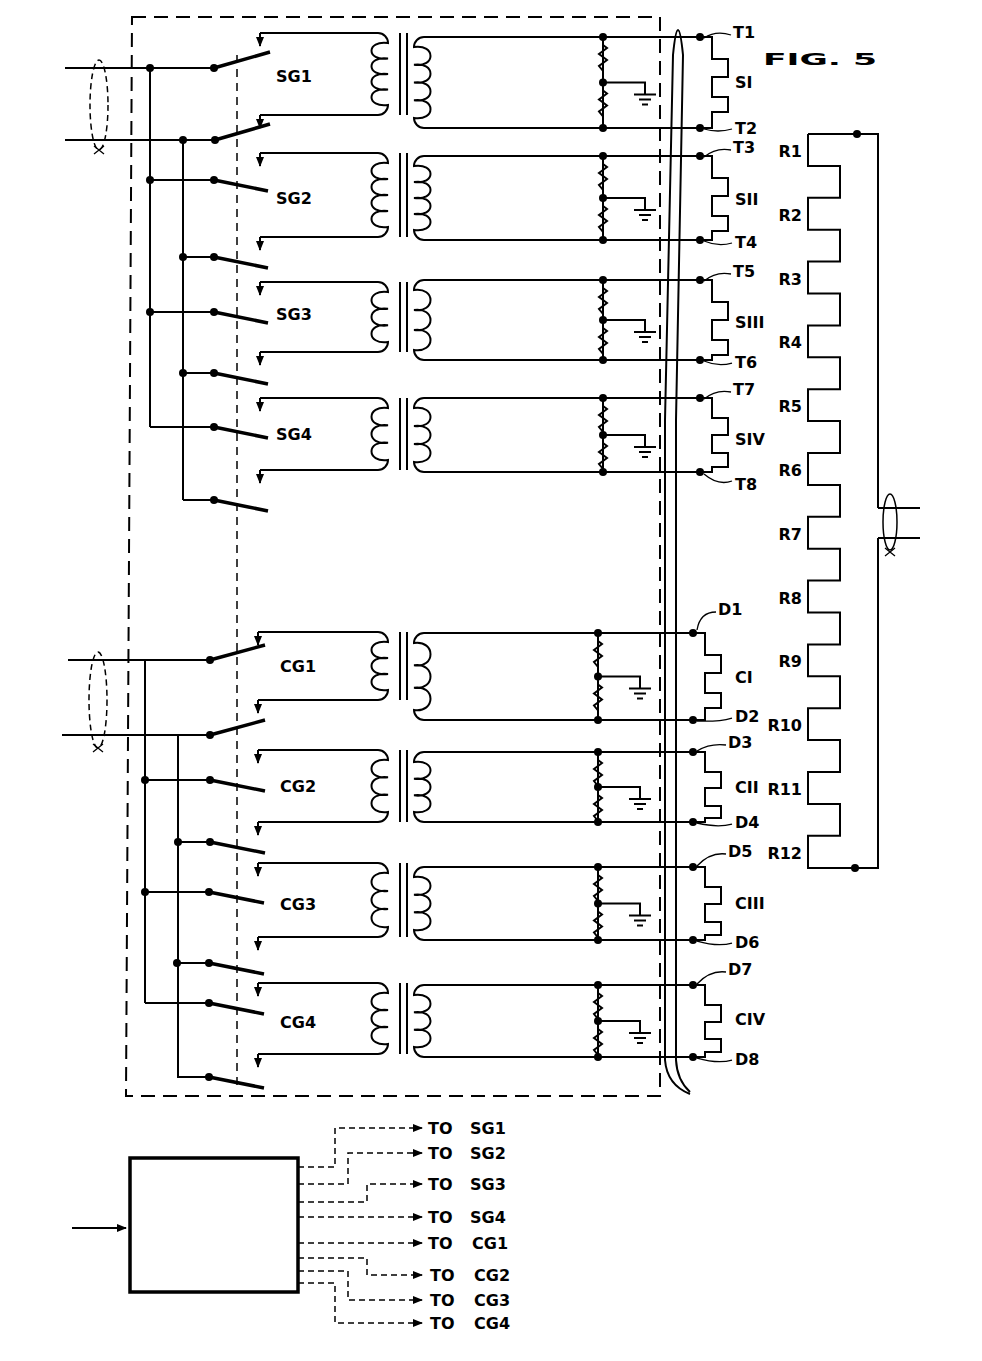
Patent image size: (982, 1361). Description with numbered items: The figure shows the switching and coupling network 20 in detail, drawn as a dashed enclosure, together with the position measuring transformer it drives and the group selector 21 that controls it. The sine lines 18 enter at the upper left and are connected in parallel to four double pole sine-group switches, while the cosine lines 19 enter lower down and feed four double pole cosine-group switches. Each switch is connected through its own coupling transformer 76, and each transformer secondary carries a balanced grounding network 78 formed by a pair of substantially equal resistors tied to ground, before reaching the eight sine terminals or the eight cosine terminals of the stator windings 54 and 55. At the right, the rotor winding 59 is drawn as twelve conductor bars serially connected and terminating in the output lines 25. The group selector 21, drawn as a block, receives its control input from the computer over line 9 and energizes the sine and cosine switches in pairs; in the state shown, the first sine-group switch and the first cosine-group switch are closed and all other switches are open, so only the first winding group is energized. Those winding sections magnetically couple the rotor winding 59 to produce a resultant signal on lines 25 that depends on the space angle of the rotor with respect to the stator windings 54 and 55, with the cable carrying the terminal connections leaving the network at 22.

The line 9 is at (87, 1228).
The sine lines 18 is at (103, 60).
The cosine lines 19 is at (103, 640).
The switching and coupling network 20 is at (492, 18).
The group selector 21 is at (232, 1158).
The cable end 22 is at (674, 1086).
The lines 25 is at (893, 500).
The stator winding 54 is at (692, 31).
The stator winding 55 is at (702, 1068).
The rotor winding 59 is at (851, 878).
The coupling transformer 76 is at (412, 479).
The balanced grounding network 78 is at (592, 80).